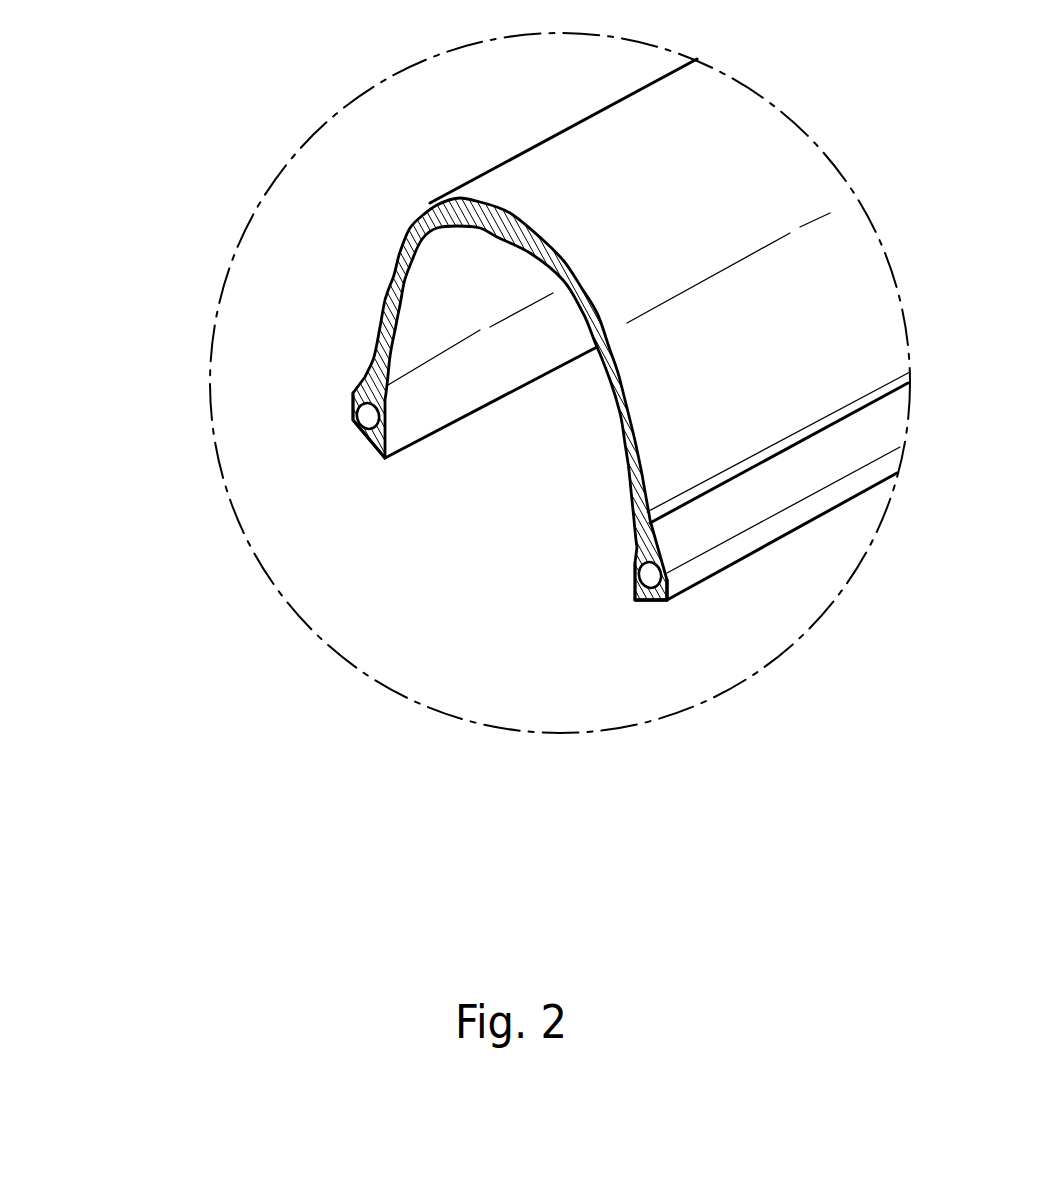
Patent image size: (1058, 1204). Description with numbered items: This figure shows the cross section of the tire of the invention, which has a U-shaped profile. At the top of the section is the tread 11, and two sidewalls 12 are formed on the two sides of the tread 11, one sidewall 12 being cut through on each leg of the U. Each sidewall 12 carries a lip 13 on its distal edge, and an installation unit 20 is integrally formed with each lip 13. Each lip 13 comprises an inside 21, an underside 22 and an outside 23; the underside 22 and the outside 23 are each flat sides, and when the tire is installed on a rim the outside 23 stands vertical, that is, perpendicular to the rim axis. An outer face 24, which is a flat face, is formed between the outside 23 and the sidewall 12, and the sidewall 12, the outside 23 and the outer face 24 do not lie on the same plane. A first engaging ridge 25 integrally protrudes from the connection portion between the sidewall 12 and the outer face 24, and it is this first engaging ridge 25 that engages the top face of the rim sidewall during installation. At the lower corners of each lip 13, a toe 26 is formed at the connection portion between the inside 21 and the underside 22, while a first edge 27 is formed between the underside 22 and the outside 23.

The tread 11 is at (773, 140).
The sidewall 12 is at (390, 280).
The lip 13 is at (158, 367).
The installation unit 20 is at (112, 213).
The inside 21 is at (411, 420).
The underside 22 is at (377, 434).
The outside 23 is at (353, 412).
The outer face 24 is at (363, 383).
The first engaging ridge 25 is at (370, 353).
The toe 26 is at (635, 602).
The first edge 27 is at (665, 603).